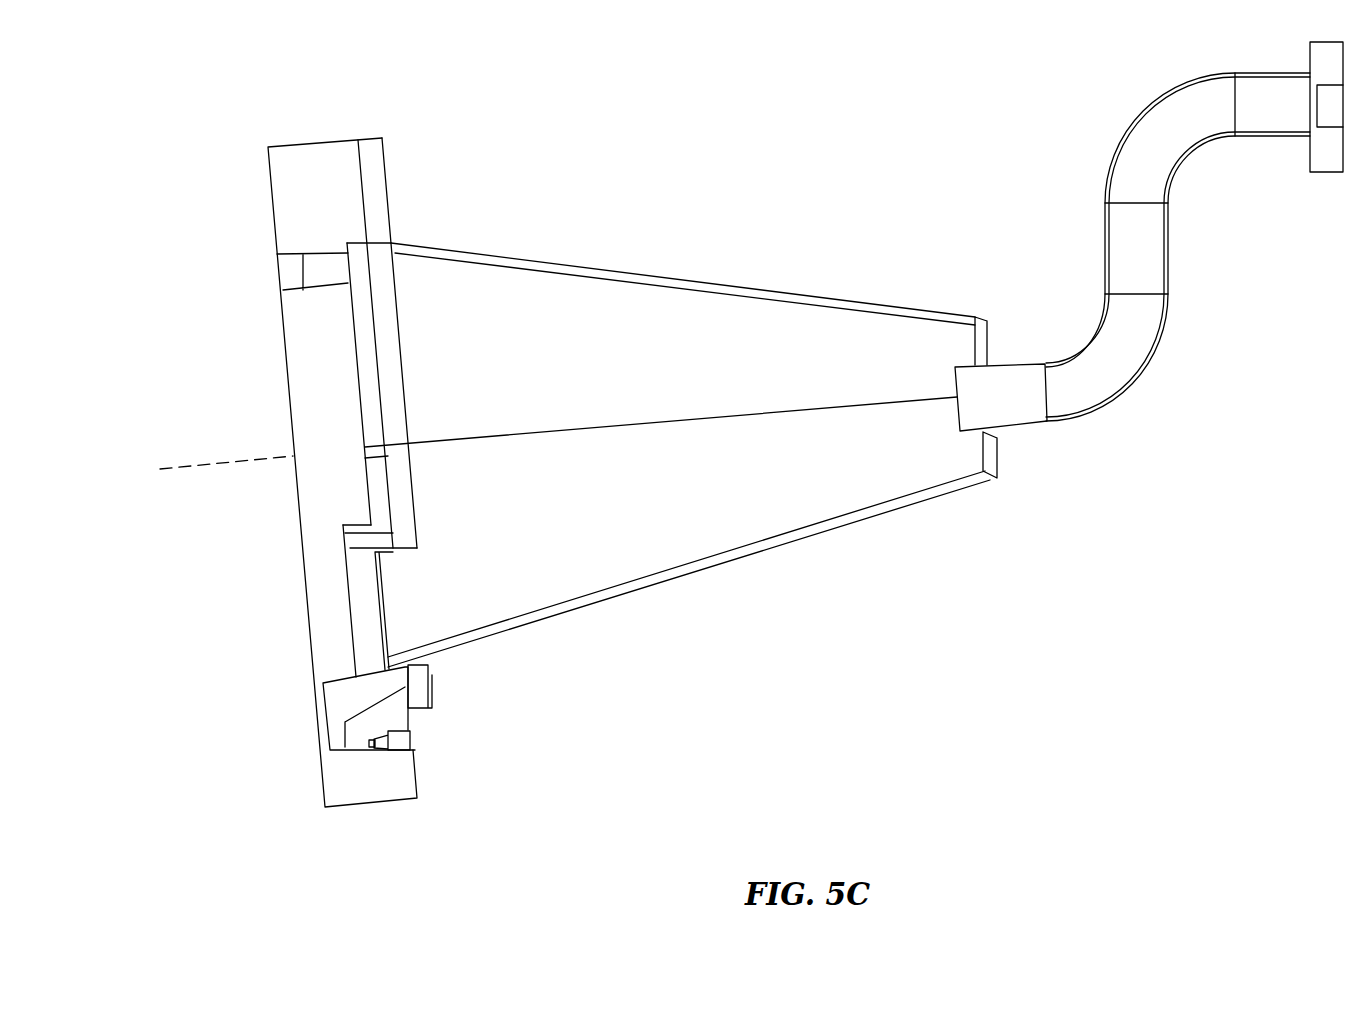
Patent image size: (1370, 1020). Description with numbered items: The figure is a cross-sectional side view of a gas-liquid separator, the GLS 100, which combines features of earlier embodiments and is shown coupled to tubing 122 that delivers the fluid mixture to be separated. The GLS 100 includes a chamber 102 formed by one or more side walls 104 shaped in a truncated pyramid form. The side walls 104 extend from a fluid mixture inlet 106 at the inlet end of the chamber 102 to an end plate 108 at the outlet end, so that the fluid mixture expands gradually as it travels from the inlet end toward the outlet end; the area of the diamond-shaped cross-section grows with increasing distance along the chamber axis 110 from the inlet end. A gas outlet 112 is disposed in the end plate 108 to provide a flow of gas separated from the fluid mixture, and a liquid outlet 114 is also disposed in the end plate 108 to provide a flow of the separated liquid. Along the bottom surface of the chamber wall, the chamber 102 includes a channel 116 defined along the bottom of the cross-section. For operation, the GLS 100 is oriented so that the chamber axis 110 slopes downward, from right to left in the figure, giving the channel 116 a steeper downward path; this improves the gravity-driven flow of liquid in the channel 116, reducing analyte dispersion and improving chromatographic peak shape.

The GLS 100 is at (778, 142).
The chamber 102 is at (666, 397).
The side walls 104 is at (568, 263).
The fluid mixture inlet 106 is at (957, 395).
The end plate 108 is at (313, 140).
The chamber axis 110 is at (177, 465).
The gas outlet 112 is at (288, 272).
The liquid outlet 114 is at (412, 737).
The channel 116 is at (596, 592).
The tubing 122 is at (1127, 390).